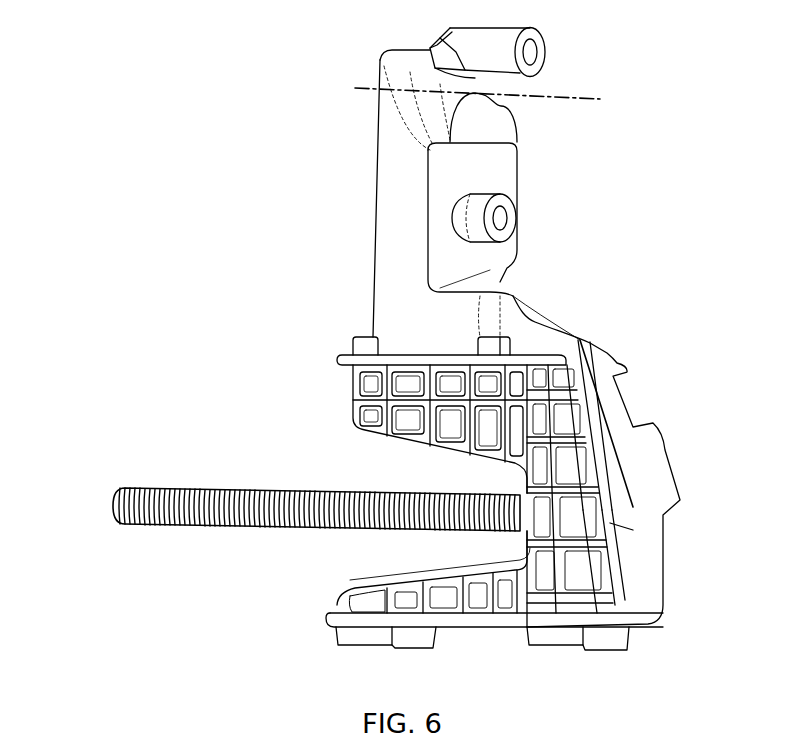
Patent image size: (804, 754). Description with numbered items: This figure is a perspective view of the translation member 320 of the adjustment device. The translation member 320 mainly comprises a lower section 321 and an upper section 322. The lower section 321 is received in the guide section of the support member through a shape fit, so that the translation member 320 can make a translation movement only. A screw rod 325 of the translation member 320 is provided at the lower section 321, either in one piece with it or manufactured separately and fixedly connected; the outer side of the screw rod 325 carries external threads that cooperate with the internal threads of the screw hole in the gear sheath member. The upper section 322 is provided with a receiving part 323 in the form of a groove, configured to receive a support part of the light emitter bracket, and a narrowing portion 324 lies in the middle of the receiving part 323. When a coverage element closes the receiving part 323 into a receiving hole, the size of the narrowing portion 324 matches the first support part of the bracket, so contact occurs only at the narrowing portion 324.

The translation member 320 is at (156, 194).
The lower section 321 is at (627, 512).
The upper section 322 is at (465, 237).
The receiving part 323 is at (475, 105).
The narrowing portion 324 is at (450, 80).
The screw rod 325 is at (280, 493).